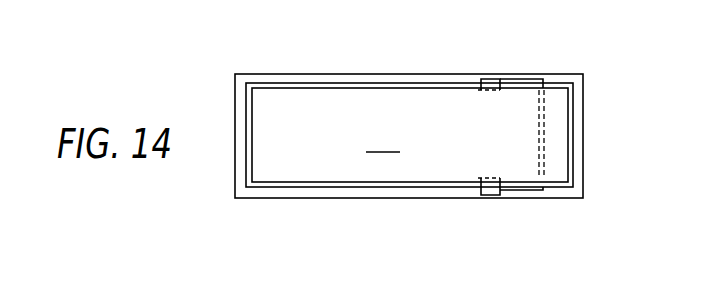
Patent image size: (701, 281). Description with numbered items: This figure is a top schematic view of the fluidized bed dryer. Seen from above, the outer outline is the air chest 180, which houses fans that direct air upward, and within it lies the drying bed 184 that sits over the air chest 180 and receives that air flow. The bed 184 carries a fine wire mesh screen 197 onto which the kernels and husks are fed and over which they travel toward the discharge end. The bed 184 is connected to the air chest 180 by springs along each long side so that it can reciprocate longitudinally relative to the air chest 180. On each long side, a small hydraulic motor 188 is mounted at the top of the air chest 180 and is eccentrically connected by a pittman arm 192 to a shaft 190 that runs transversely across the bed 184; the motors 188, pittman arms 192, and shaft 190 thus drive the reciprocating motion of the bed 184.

The air chest 180 is at (302, 74).
The drying bed 184 is at (250, 116).
The hydraulic motor 188 is at (494, 79).
The shaft 190 is at (540, 136).
The pittman arm 192 is at (510, 196).
The fine wire mesh screen 197 is at (383, 141).